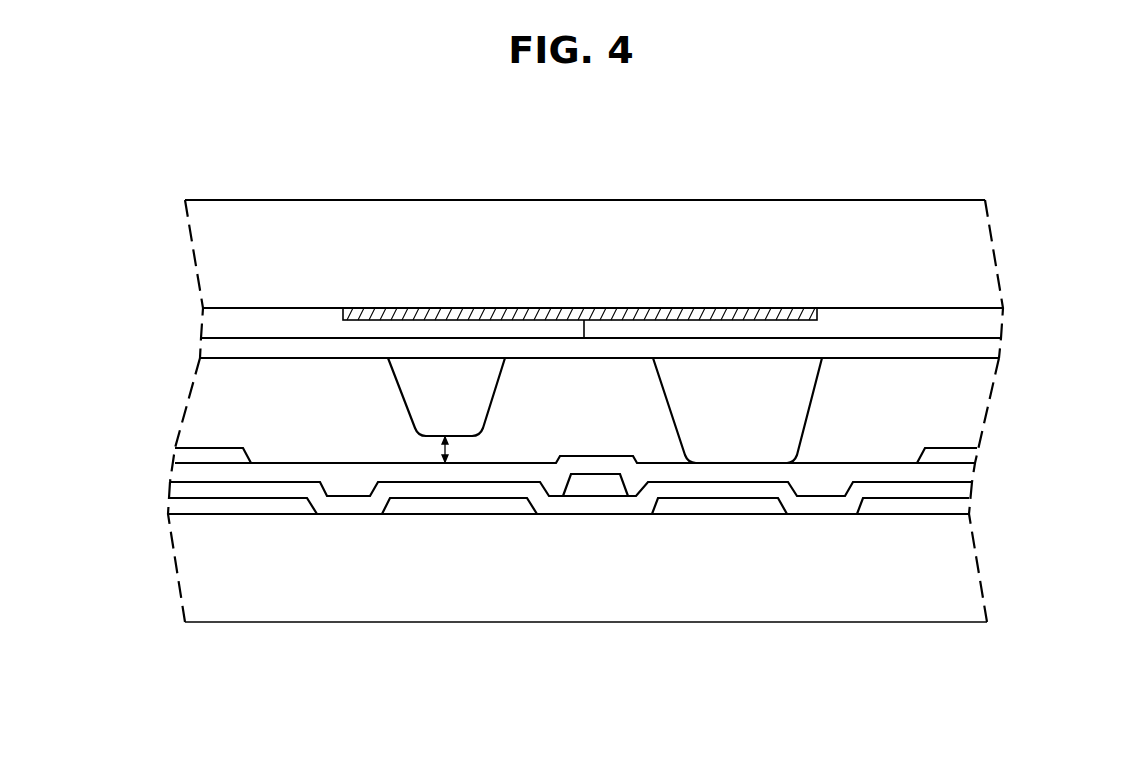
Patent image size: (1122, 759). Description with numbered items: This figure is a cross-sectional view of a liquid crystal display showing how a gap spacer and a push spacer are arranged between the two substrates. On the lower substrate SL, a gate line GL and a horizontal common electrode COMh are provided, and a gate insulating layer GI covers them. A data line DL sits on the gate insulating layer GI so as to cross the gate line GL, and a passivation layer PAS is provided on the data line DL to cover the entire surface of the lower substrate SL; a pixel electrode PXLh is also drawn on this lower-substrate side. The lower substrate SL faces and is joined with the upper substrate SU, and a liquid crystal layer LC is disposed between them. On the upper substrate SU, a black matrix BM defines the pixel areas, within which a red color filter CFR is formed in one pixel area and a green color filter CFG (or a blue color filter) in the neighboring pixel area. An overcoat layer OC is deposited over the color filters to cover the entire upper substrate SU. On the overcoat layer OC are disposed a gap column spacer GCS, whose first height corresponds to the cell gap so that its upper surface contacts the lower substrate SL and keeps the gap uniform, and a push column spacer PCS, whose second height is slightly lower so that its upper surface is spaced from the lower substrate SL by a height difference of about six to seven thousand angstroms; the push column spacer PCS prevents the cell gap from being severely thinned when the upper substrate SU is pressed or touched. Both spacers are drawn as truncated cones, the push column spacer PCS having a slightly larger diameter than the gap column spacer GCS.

The upper substrate SU is at (925, 230).
The black matrix BM is at (477, 307).
The red color filter CFR is at (290, 323).
The green color filter CFG is at (840, 323).
The overcoat layer OC is at (556, 352).
The push column spacer PCS is at (410, 385).
The gap column spacer GCS is at (790, 405).
The liquid crystal layer LC is at (960, 407).
The horizontal pixel electrode PXLh is at (178, 452).
The passivation layer PAS is at (538, 473).
The data line DL is at (594, 482).
The gate insulating layer GI is at (637, 508).
The gate line GL is at (457, 507).
The horizontal common electrode COMh is at (290, 503).
The lower substrate SL is at (228, 583).